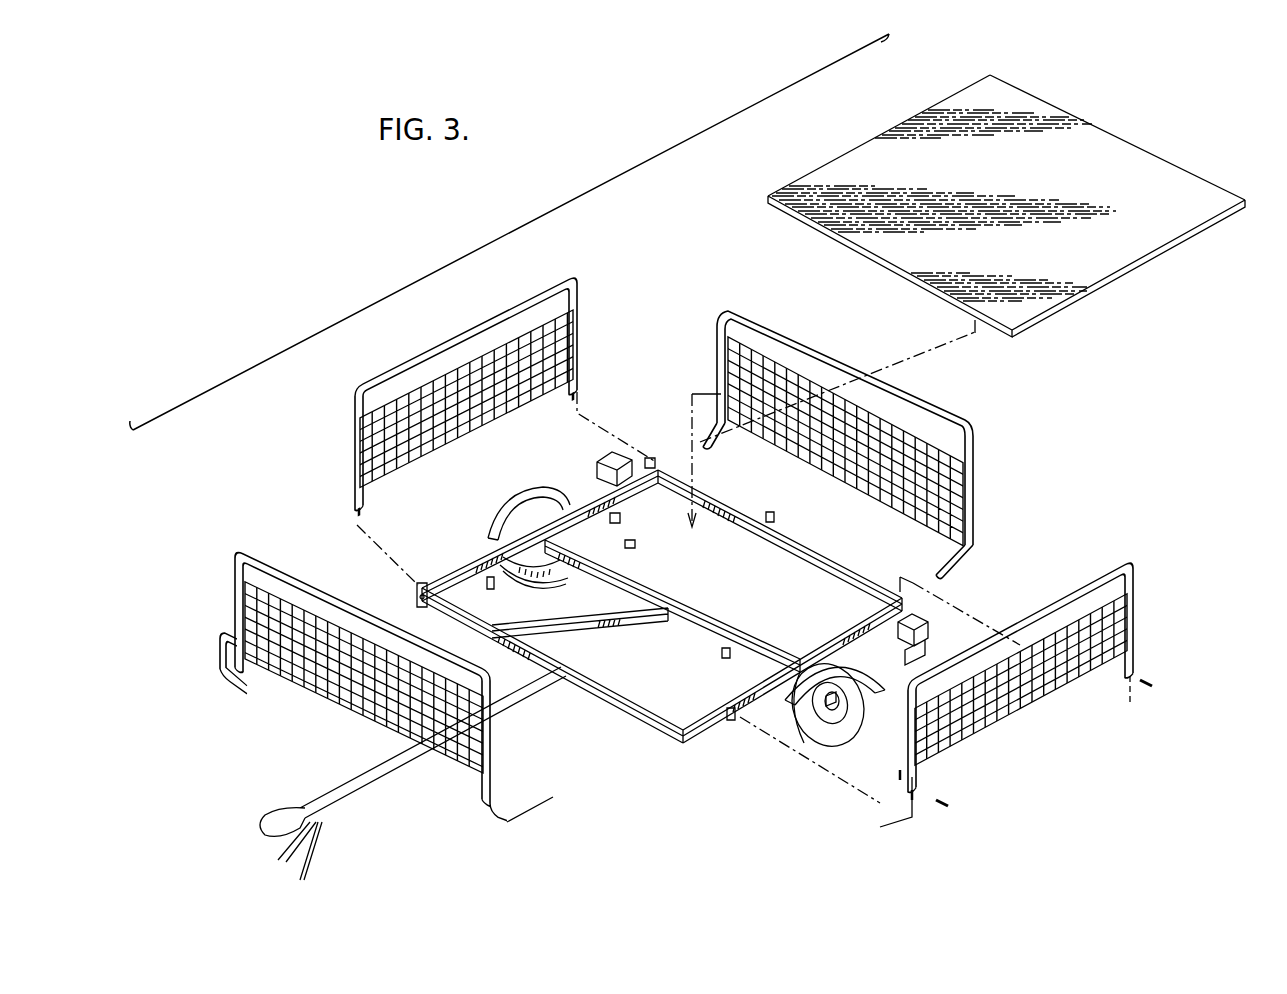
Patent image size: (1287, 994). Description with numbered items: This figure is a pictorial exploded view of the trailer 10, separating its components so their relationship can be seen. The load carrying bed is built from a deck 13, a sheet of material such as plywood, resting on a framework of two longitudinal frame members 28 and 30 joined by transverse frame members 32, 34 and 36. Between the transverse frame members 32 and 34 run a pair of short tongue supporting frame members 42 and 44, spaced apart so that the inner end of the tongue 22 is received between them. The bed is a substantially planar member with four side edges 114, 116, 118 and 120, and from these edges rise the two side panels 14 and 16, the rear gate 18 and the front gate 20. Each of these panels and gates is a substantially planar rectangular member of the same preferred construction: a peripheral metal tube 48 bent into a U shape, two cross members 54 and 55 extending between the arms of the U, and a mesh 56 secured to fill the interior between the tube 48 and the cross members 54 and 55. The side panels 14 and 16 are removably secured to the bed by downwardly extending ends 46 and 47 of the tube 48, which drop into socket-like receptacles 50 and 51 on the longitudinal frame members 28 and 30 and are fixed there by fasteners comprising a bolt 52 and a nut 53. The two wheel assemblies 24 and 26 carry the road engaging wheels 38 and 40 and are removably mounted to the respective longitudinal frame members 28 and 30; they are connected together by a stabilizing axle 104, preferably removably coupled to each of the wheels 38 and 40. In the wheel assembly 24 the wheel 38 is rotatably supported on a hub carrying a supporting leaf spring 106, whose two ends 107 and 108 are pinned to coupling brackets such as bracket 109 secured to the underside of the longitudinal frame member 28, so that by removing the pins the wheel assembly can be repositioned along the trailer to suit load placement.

The trailer 10 is at (556, 208).
The deck 13 is at (1006, 188).
The side panel 14 is at (487, 393).
The side panel 16 is at (999, 694).
The rear gate 18 is at (864, 424).
The front gate 20 is at (312, 718).
The tongue 22 is at (373, 776).
The wheel assembly 24 is at (532, 468).
The wheel assembly 26 is at (795, 771).
The longitudinal frame member 28 is at (473, 558).
The longitudinal frame member 30 is at (835, 638).
The transverse frame member 32 is at (533, 650).
The transverse frame member 34 is at (735, 621).
The transverse frame member 36 is at (770, 510).
The wheel 38 is at (545, 578).
The wheel 40 is at (865, 668).
The tongue supporting frame member 42 is at (605, 618).
The tongue supporting frame member 44 is at (645, 630).
The downwardly extending end 46 is at (357, 520).
The downwardly extending end 47 is at (581, 389).
The tube 48 is at (369, 389).
The receptacle 50 is at (417, 586).
The receptacle 51 is at (649, 455).
The bolt 52 is at (950, 811).
The nut 53 is at (878, 789).
The cross member 54 is at (906, 409).
The cross member 55 is at (850, 486).
The mesh 56 is at (958, 480).
The stabilizing axle 104 is at (727, 651).
The leaf spring 106 is at (630, 553).
The end of leaf spring 107 is at (508, 576).
The end of leaf spring 108 is at (625, 521).
The coupling bracket 109 is at (730, 720).
The side edge 114 is at (903, 271).
The side edge 116 is at (1165, 162).
The side edge 118 is at (842, 149).
The side edge 120 is at (1142, 260).